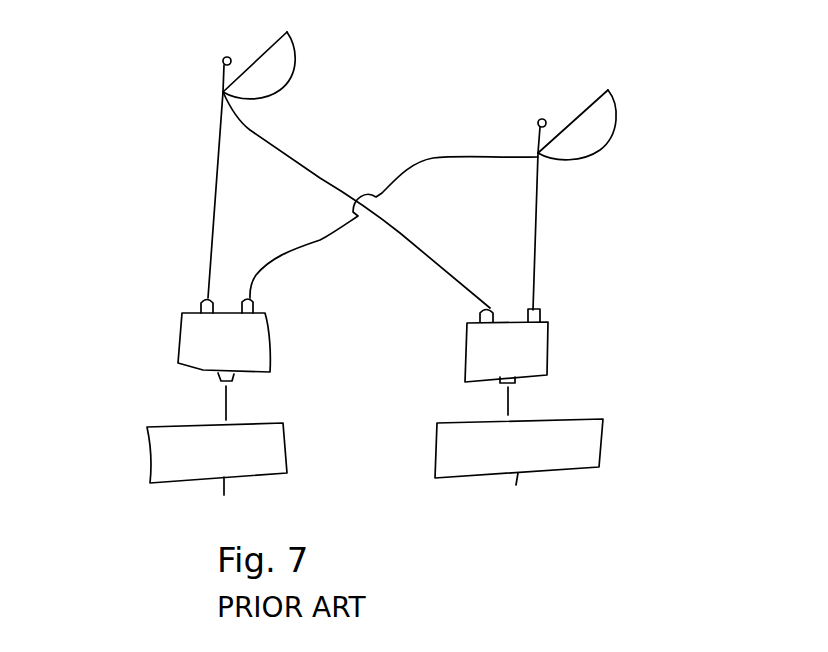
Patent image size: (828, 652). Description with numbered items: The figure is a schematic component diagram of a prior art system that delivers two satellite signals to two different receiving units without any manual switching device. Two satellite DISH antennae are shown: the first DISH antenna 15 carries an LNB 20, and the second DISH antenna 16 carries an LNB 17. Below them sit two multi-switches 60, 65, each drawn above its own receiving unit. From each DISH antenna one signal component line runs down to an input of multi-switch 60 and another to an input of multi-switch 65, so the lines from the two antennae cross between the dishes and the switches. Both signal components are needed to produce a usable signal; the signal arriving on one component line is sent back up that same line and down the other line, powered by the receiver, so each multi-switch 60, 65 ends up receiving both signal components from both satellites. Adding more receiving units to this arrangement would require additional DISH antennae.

The DISH antenna 15 is at (283, 48).
The second DISH antenna 16 is at (606, 121).
The LNB 17 is at (539, 119).
The LNB 20 is at (223, 63).
The multi-switch 60 is at (206, 336).
The multi-switch 65 is at (533, 347).